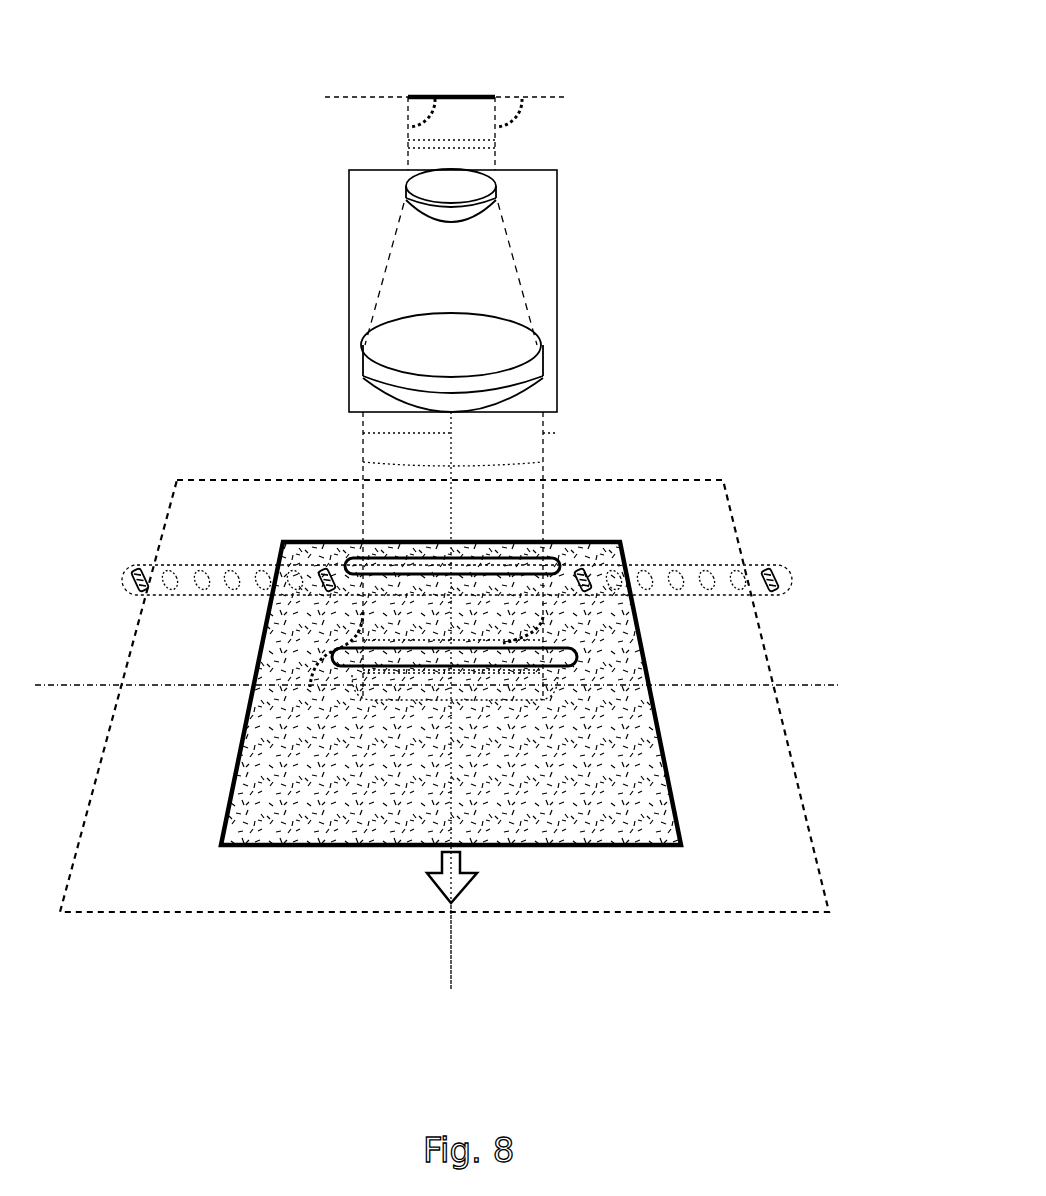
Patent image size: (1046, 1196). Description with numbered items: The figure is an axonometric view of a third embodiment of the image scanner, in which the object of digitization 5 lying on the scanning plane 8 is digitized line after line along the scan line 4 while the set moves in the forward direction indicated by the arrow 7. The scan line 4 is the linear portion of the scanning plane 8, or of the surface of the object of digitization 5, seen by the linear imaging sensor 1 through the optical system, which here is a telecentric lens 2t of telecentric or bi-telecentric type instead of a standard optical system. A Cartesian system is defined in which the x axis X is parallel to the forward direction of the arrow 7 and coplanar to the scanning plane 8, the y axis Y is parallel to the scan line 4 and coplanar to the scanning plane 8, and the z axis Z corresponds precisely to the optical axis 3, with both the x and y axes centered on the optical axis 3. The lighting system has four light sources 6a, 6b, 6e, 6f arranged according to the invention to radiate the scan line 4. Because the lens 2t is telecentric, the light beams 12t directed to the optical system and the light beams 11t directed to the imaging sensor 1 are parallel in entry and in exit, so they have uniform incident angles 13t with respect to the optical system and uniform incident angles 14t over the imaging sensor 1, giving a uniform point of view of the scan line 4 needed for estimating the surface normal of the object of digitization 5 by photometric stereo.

The imaging sensor 1 is at (452, 97).
The telecentric lens 2t is at (557, 290).
The optical axis 3 is at (451, 433).
The scan line 4 is at (407, 690).
The object of digitization 5 is at (680, 835).
The light source 6a is at (575, 655).
The light source 6b is at (560, 560).
The light source 6e is at (153, 568).
The light source 6f is at (757, 566).
The arrow 7 is at (451, 890).
The scanning plane 8 is at (828, 908).
The light beams directed to the imaging sensor 11t is at (408, 148).
The light beams directed to the optical system 12t is at (543, 462).
The incident angles with respect to the optical system 13t is at (340, 648).
The incident angles over the imaging sensor 14t is at (432, 118).
The x axis X is at (451, 973).
The y axis Y is at (805, 686).
The z axis Z is at (363, 433).